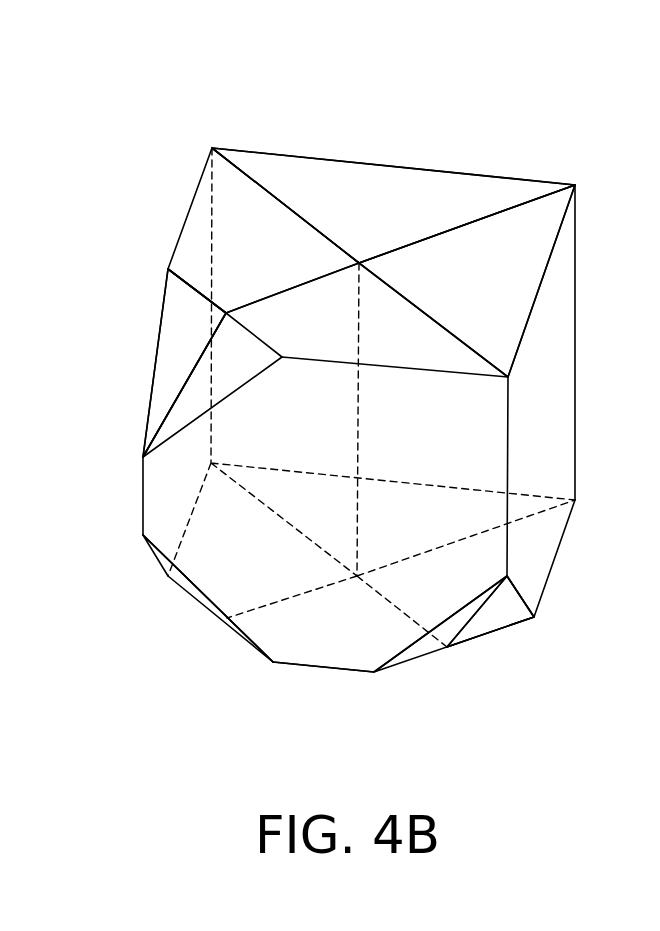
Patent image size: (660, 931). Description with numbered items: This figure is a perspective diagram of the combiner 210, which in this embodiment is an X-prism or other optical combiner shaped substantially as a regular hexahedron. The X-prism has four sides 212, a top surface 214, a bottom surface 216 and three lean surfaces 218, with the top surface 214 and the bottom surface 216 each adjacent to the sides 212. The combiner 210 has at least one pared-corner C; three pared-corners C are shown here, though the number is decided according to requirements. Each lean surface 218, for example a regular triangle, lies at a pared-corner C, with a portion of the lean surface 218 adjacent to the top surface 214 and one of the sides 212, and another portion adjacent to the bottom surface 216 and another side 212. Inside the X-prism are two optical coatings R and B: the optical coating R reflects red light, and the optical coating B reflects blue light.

The combiner 210 is at (190, 137).
The sides 212 is at (167, 502).
The top surface 214 is at (388, 188).
The bottom surface 216 is at (338, 635).
The lean surfaces 218 is at (172, 363).
The optical coating R is at (270, 194).
The optical coating B is at (493, 213).
The pared-corner C is at (130, 307).